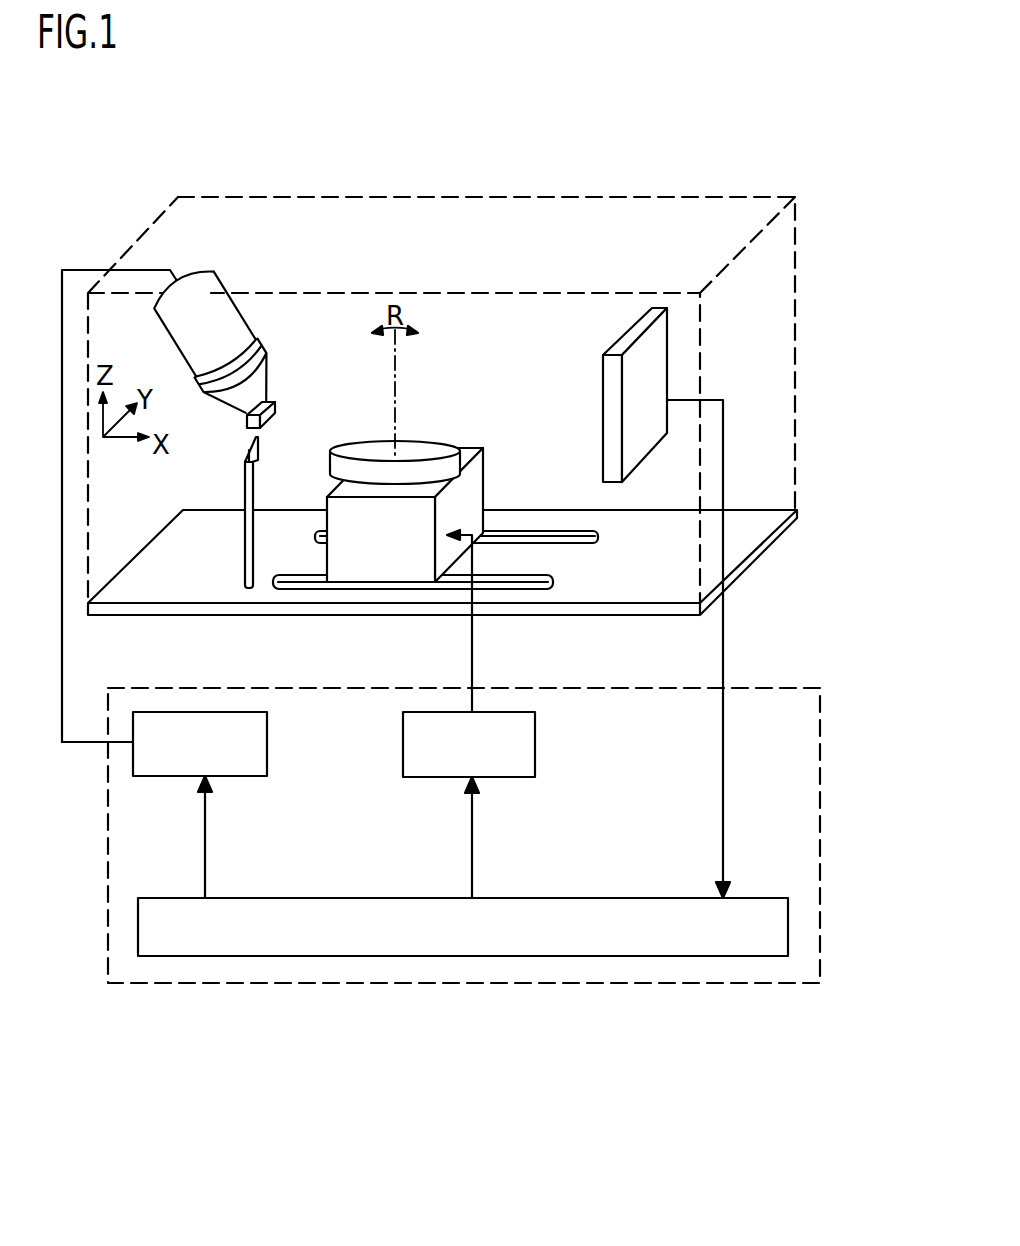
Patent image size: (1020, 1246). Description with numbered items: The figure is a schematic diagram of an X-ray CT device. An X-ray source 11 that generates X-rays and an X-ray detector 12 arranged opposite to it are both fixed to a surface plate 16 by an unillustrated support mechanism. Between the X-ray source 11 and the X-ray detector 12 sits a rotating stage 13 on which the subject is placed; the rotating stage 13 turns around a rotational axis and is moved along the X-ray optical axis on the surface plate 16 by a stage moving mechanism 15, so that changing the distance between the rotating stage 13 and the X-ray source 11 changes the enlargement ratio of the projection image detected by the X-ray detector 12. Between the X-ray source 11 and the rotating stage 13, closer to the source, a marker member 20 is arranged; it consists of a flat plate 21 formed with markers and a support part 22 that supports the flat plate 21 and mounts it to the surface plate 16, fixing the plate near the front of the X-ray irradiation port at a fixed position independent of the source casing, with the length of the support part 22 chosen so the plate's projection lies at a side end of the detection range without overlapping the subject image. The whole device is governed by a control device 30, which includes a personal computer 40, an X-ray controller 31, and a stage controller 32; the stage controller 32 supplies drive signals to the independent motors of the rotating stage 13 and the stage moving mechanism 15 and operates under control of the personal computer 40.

The X-ray source 11 is at (200, 285).
The X-ray detector 12 is at (657, 360).
The rotating stage 13 is at (418, 450).
The stage moving mechanism 15 is at (472, 505).
The surface plate 16 is at (743, 532).
The marker member 20 is at (180, 512).
The flat plate 21 is at (245, 443).
The support part 22 is at (240, 515).
The control device 30 is at (464, 885).
The X-ray controller 31 is at (255, 748).
The stage controller 32 is at (528, 750).
The personal computer 40 is at (433, 957).